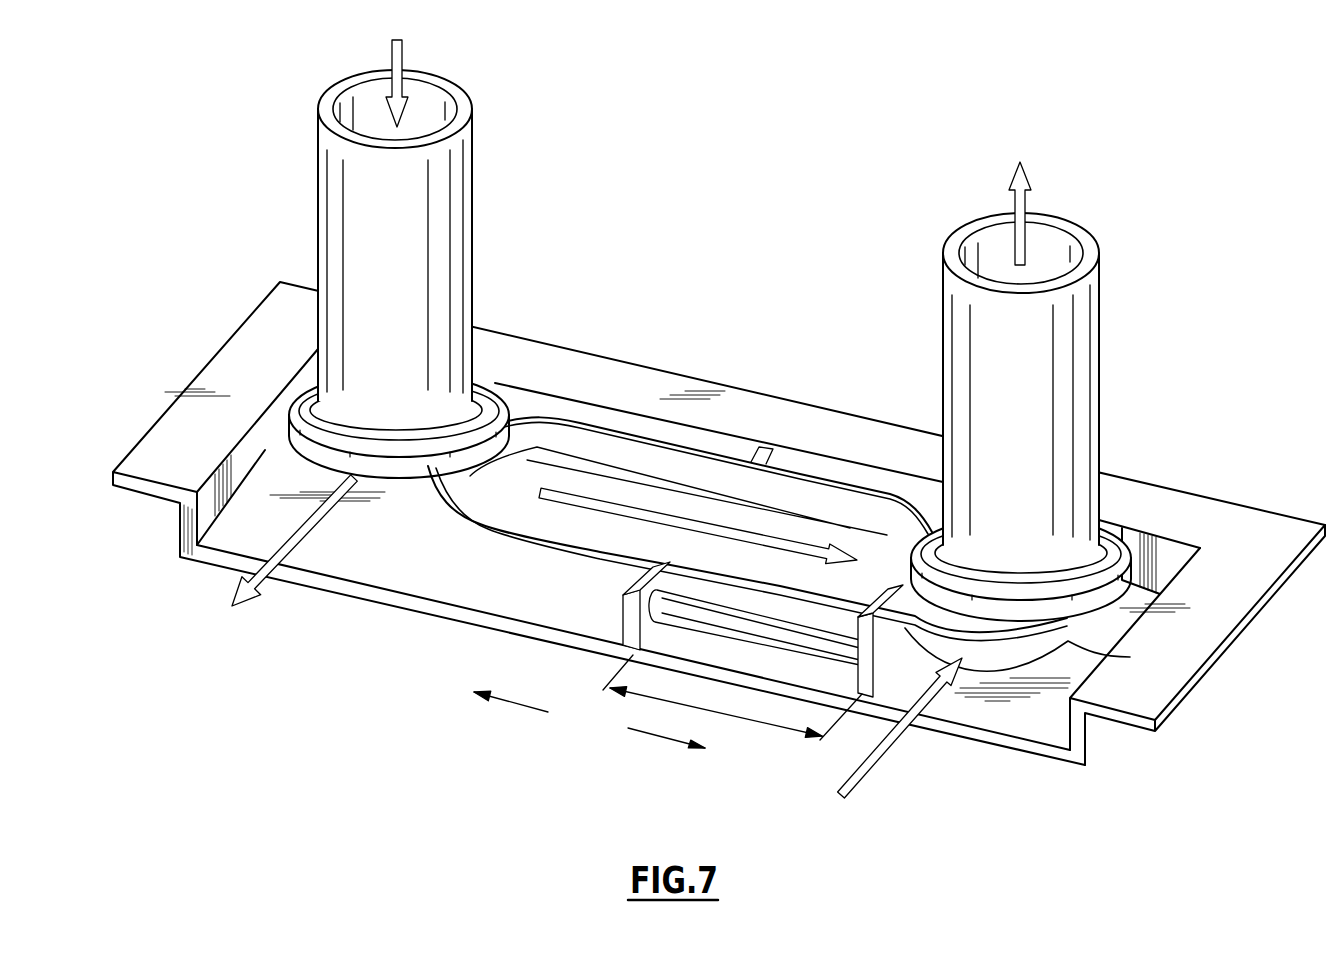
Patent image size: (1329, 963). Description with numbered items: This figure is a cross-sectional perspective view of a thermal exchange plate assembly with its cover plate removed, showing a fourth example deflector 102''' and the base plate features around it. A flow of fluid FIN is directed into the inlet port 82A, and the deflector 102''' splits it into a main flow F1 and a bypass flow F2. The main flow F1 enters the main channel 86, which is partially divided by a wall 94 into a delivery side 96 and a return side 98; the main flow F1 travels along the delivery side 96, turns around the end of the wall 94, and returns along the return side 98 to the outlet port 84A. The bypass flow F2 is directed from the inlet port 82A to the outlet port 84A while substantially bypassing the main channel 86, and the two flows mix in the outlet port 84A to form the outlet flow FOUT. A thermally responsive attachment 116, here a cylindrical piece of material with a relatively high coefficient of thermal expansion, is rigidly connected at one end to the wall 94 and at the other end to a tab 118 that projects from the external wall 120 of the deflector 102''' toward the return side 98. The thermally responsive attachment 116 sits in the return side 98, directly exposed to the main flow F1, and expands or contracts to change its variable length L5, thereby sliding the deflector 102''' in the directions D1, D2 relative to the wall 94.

The inlet port 82A is at (333, 233).
The outlet port 84A is at (1095, 332).
The main channel 86 is at (265, 485).
The wall 94 is at (630, 607).
The delivery side 96 is at (480, 585).
The return side 98 is at (1062, 729).
The deflector 102''' is at (747, 463).
The thermally responsive attachment 116 is at (803, 650).
The tab 118 is at (920, 632).
The external wall 120 is at (1041, 650).
The main flow F1 is at (322, 505).
The bypass flow F2 is at (650, 507).
The flow of fluid FIN is at (403, 53).
The outlet flow FOUT is at (1025, 203).
The direction D1 is at (548, 712).
The direction D2 is at (628, 730).
The variable length L5 is at (736, 718).